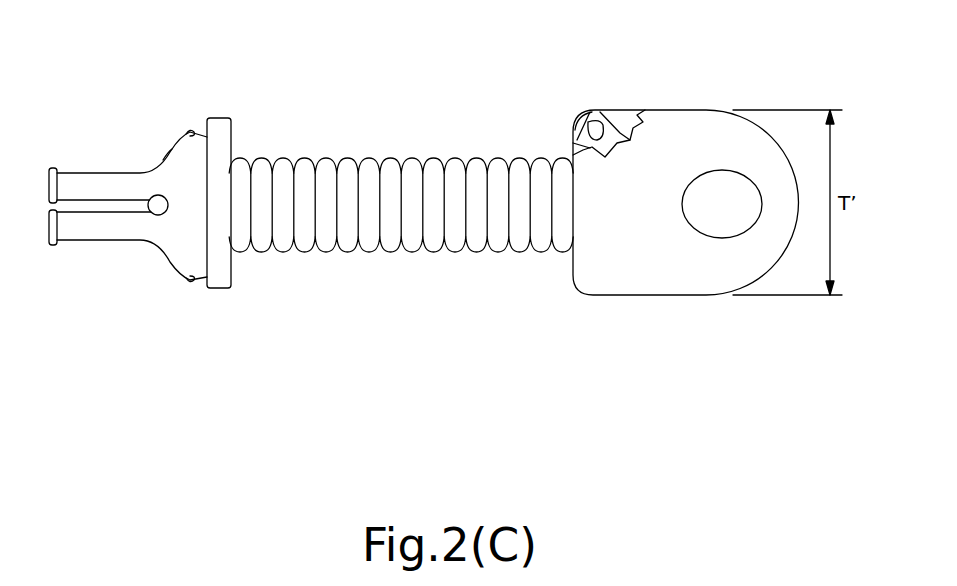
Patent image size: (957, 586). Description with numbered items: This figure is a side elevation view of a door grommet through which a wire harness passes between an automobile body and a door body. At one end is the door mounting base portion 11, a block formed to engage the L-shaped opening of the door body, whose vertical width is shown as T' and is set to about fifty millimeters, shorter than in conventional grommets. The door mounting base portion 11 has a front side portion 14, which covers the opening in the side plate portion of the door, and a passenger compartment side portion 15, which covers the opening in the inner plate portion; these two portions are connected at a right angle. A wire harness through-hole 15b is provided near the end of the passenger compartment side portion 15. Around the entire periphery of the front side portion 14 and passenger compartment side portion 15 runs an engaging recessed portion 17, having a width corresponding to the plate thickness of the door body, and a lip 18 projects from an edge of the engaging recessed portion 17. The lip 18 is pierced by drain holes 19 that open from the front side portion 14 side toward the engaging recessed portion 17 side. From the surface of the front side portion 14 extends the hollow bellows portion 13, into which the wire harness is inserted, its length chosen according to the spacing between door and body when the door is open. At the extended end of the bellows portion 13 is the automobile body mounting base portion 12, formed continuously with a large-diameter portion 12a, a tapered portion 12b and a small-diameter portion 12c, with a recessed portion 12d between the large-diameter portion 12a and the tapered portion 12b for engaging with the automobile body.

The door mounting base portion 11 is at (740, 103).
The automobile body mounting base portion 12 is at (152, 272).
The large-diameter portion 12a is at (224, 128).
The tapered portion 12b is at (168, 154).
The small-diameter portion 12c is at (87, 177).
The recessed portion 12d is at (192, 130).
The bellows portion 13 is at (408, 252).
The front side portion 14 is at (573, 147).
The passenger compartment side portion 15 is at (640, 272).
The wire harness through-hole 15b is at (692, 228).
The engaging recessed portion 17 is at (602, 125).
The lip 18 is at (598, 122).
The drain holes 19 is at (580, 122).